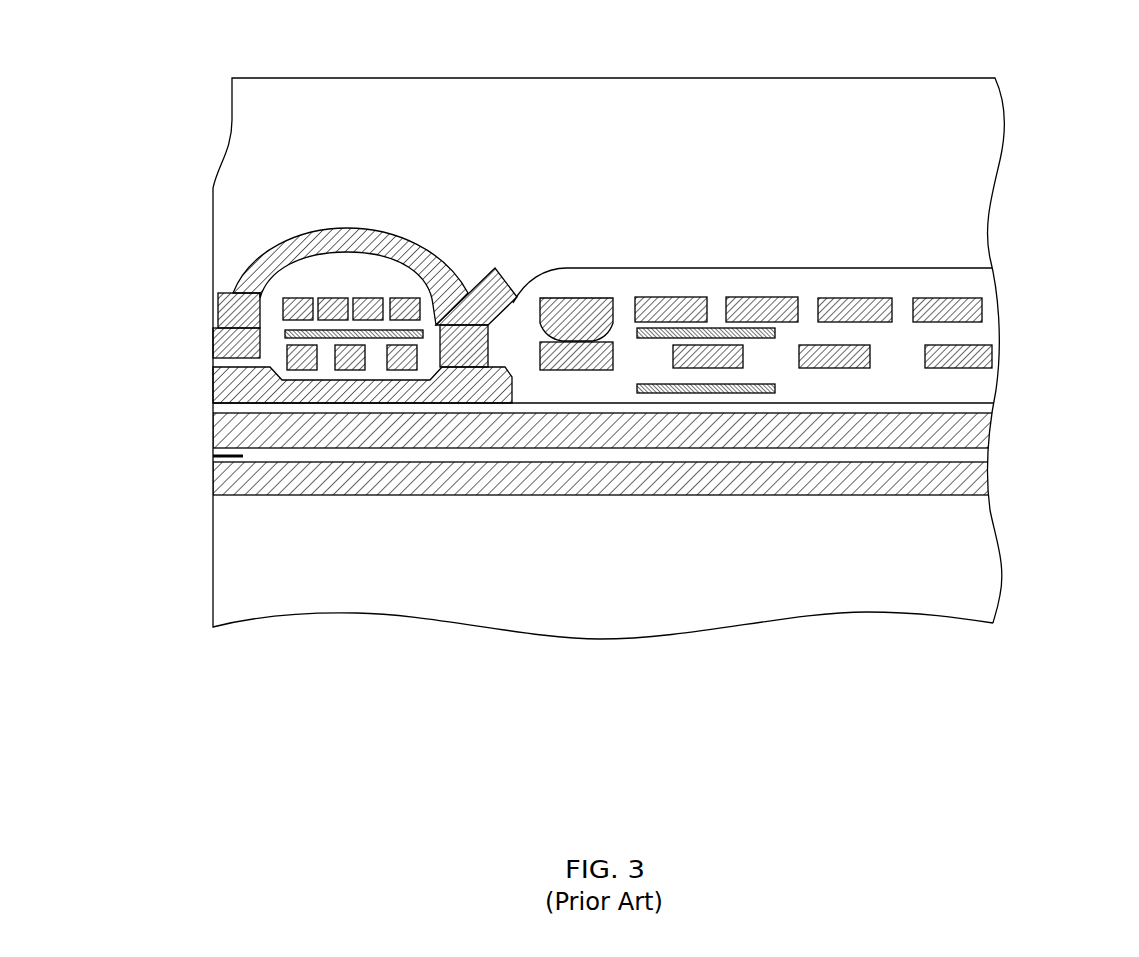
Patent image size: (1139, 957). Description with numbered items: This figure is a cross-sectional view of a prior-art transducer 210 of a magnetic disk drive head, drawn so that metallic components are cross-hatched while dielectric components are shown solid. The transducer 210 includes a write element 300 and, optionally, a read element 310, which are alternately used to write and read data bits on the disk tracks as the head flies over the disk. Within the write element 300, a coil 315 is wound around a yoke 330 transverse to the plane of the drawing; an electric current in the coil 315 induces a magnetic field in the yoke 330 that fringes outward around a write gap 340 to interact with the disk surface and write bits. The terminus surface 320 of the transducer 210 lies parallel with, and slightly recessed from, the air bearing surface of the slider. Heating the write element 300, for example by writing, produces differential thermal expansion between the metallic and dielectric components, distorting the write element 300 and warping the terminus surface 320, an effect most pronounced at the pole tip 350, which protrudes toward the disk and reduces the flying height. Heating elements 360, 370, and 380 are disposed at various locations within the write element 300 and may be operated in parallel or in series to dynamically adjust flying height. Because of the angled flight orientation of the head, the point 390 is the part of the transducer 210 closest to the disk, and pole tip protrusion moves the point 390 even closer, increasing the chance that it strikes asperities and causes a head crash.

The transducer 210 is at (592, 77).
The write element 300 is at (142, 232).
The read element 310 is at (178, 413).
The coil 315 is at (997, 309).
The terminus surface 320 is at (213, 534).
The yoke 330 is at (293, 240).
The write gap 340 is at (213, 363).
The pole tip 350 is at (213, 346).
The heating element 360 is at (423, 333).
The heating element 370 is at (718, 328).
The heating element 380 is at (775, 388).
The point 390 is at (213, 188).